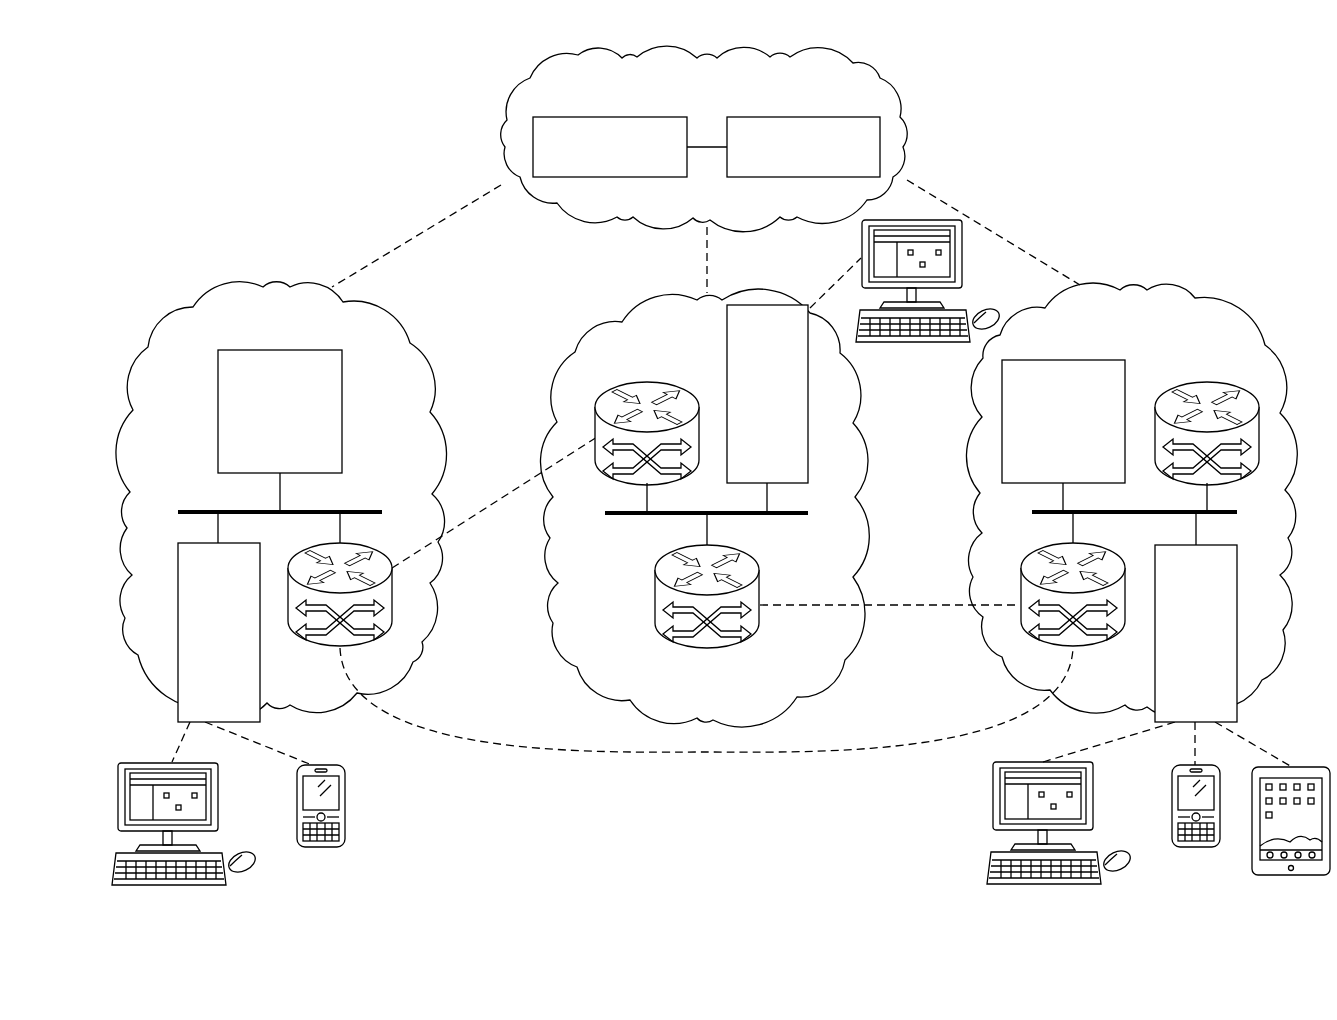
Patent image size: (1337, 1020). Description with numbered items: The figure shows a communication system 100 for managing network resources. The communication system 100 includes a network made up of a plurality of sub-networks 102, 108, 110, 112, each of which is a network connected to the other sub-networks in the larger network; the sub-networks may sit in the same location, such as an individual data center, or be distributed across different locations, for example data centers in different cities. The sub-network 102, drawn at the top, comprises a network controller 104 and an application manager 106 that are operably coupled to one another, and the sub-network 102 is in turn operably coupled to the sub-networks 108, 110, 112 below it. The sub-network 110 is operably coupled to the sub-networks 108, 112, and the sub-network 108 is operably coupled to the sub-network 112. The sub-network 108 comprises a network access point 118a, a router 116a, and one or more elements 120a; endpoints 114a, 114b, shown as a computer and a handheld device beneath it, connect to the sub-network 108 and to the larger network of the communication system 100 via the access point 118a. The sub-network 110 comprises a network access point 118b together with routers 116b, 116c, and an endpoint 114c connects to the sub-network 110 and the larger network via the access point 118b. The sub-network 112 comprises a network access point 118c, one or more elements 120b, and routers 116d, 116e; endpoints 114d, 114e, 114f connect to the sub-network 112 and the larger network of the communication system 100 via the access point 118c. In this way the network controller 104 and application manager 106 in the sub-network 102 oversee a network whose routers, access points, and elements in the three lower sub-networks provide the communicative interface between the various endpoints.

The communication system 100 is at (328, 158).
The sub-network 102 is at (500, 133).
The network controller 104 is at (612, 117).
The application manager 106 is at (803, 117).
The sub-network 108 is at (238, 282).
The sub-network 110 is at (665, 290).
The sub-network 112 is at (1178, 282).
The endpoint 114a is at (232, 828).
The endpoint 114b is at (317, 848).
The endpoint 114c is at (928, 360).
The endpoint 114d is at (1107, 828).
The endpoint 114e is at (1198, 848).
The endpoint 114f is at (1298, 767).
The router 116a is at (322, 648).
The router 116b is at (640, 383).
The router 116c is at (686, 648).
The router 116d is at (1095, 648).
The router 116e is at (1215, 383).
The network access point 118a is at (194, 643).
The network access point 118b is at (743, 404).
The network access point 118c is at (1171, 643).
The element 120a is at (255, 449).
The element 120b is at (1038, 459).